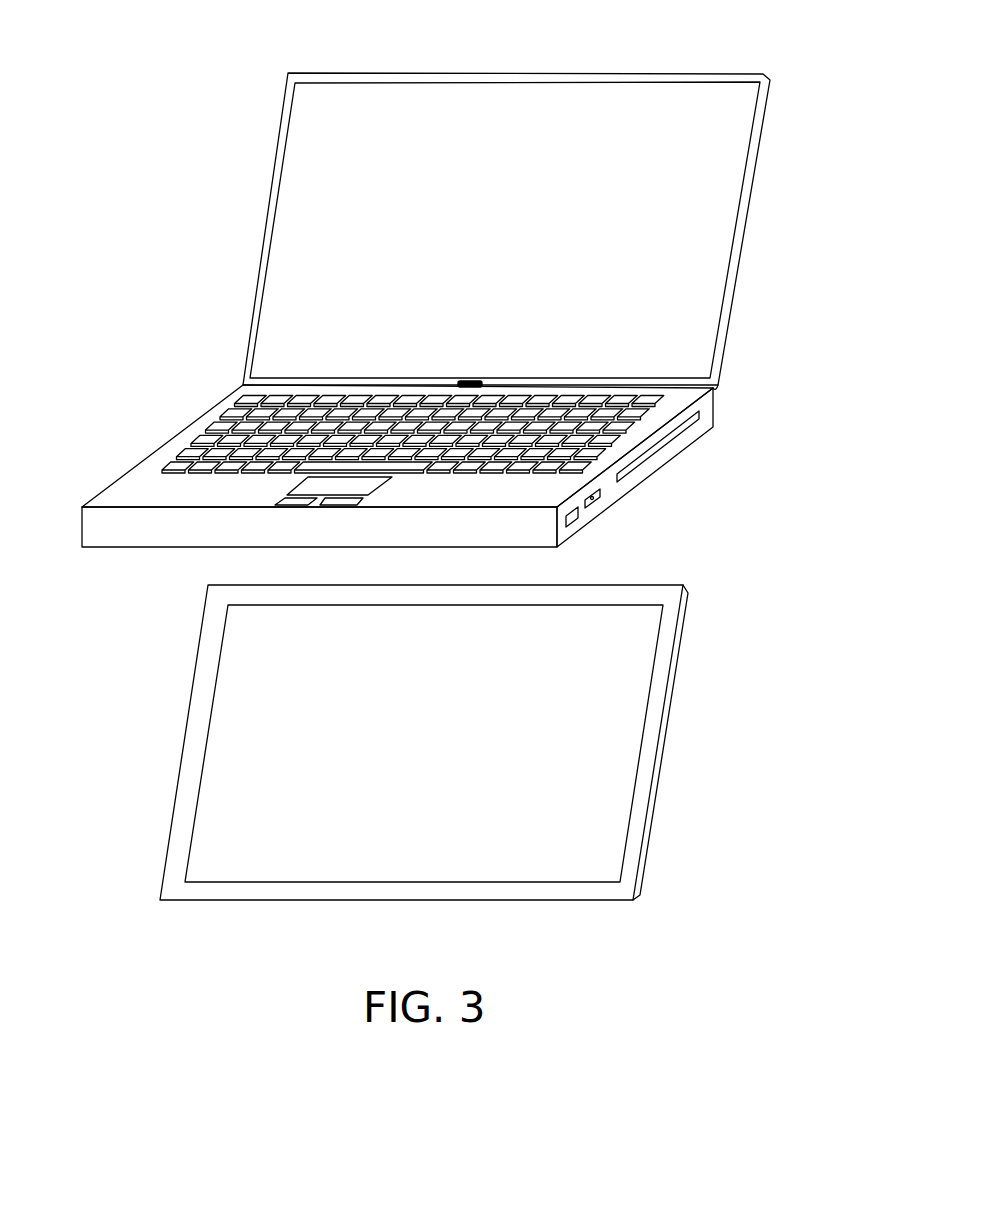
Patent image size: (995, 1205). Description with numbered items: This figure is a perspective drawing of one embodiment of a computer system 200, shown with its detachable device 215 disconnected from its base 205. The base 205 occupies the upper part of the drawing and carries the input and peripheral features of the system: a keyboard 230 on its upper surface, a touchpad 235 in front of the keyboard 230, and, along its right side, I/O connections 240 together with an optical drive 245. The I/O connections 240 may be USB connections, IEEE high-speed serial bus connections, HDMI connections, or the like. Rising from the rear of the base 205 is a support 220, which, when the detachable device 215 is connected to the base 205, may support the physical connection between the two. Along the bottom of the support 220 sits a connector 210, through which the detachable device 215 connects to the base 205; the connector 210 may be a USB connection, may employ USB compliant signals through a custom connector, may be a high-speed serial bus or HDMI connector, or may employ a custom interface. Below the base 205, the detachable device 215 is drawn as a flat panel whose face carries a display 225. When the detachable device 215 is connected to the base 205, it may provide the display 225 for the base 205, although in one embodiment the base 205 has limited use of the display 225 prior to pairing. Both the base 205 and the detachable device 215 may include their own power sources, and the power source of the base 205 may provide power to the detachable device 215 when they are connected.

The computer system 200 is at (100, 66).
The base 205 is at (170, 447).
The connector 210 is at (470, 382).
The detachable device 215 is at (405, 742).
The support 220 is at (306, 211).
The display 225 is at (220, 765).
The keyboard 230 is at (243, 417).
The touchpad 235 is at (300, 503).
The I/O connections 240 is at (596, 496).
The optical drive 245 is at (700, 412).